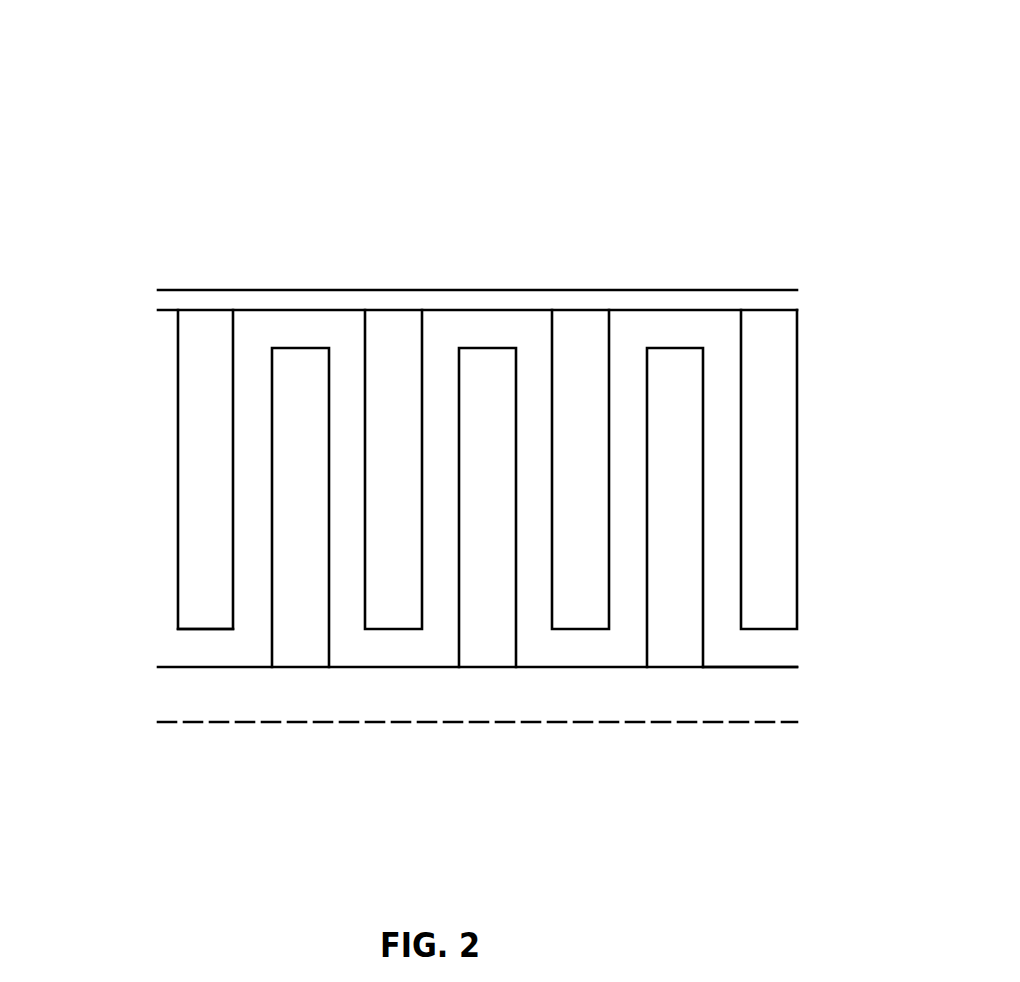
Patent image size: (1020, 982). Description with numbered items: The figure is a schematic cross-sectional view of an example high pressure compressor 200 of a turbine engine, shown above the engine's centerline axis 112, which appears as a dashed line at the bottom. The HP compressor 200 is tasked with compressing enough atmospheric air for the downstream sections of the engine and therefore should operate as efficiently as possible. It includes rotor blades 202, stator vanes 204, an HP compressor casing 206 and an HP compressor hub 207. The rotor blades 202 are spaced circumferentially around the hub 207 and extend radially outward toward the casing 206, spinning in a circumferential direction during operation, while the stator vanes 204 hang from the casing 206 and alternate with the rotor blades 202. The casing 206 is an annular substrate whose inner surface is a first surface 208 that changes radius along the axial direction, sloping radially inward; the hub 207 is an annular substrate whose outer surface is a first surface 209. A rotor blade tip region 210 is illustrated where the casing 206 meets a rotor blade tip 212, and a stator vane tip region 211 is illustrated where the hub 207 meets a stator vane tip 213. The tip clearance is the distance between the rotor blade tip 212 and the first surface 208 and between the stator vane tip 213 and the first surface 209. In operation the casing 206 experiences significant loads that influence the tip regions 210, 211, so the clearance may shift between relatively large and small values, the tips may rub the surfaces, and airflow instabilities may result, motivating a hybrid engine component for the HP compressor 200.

The high pressure compressor 200 is at (807, 86).
The rotor blades 202 is at (510, 650).
The stator vanes 204 is at (390, 325).
The HP compressor casing 206 is at (727, 302).
The HP compressor hub 207 is at (735, 667).
The first surface 208 is at (318, 310).
The first surface 209 is at (408, 667).
The rotor blade tip region 210 is at (250, 342).
The stator vane tip region 211 is at (184, 647).
The rotor blade tip 212 is at (300, 347).
The stator vane tip 213 is at (217, 630).
The centerline axis 112 is at (788, 723).